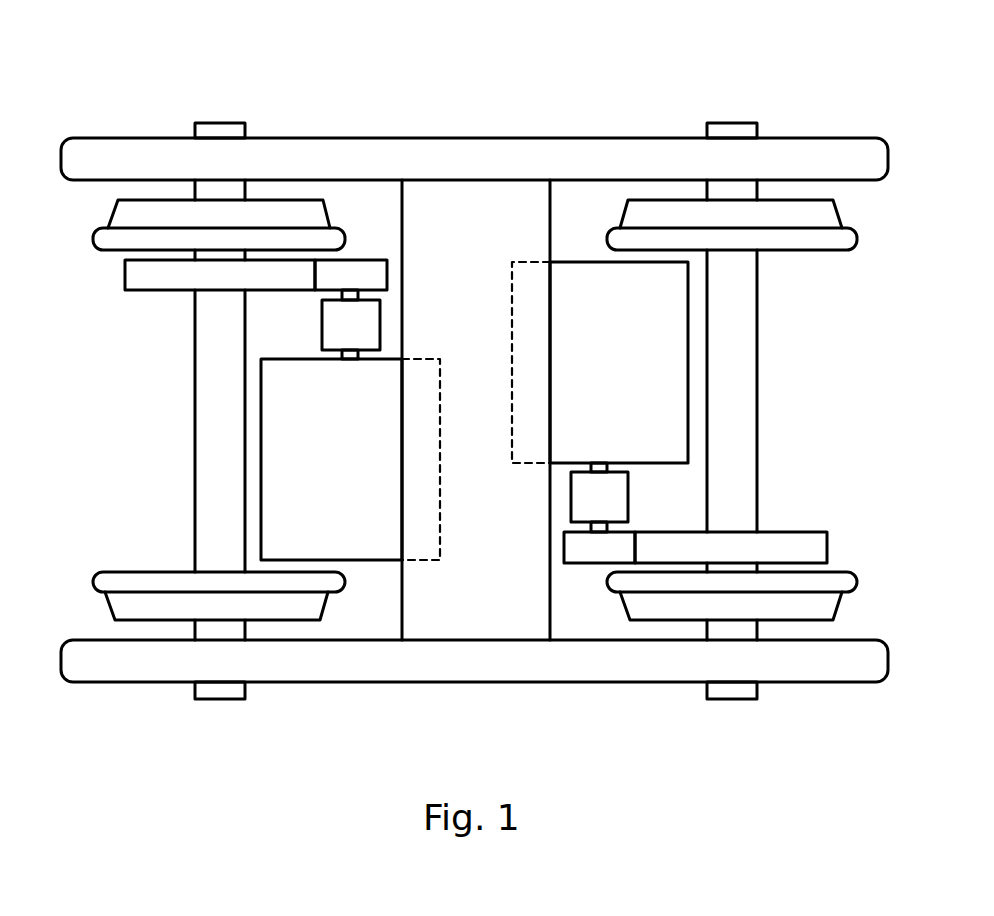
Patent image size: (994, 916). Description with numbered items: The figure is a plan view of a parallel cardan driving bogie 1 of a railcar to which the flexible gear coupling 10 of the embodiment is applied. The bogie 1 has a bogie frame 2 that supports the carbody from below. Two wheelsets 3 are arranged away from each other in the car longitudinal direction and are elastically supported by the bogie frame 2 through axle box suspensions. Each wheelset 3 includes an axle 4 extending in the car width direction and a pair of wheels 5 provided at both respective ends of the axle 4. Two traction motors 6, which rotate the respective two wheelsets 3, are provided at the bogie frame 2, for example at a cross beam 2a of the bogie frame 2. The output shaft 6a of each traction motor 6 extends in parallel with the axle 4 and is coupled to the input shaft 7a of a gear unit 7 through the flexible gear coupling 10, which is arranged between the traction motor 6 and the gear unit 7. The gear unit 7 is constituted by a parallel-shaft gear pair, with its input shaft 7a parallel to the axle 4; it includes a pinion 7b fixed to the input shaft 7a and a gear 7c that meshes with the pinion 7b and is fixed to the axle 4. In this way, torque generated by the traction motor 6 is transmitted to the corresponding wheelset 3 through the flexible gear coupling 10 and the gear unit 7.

The bogie 1 is at (500, 88).
The bogie frame 2 is at (546, 160).
The cross beam 2a is at (470, 612).
The wheelset 3 is at (157, 404).
The axle 4 is at (200, 447).
The wheel 5 is at (97, 237).
The traction motor 6 is at (359, 475).
The output shaft 6a is at (370, 356).
The gear unit 7 is at (108, 277).
The input shaft 7a is at (360, 295).
The pinion 7b is at (368, 263).
The gear 7c is at (180, 288).
The flexible gear coupling 10 is at (330, 325).